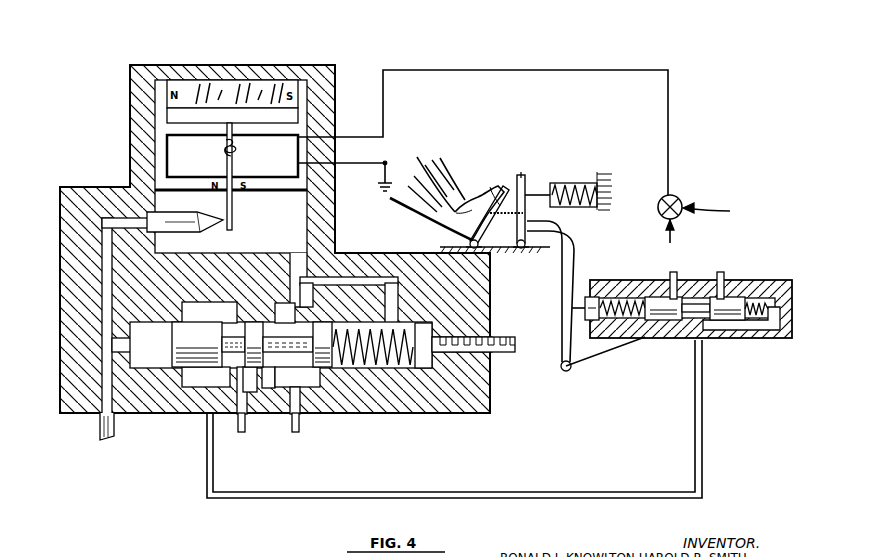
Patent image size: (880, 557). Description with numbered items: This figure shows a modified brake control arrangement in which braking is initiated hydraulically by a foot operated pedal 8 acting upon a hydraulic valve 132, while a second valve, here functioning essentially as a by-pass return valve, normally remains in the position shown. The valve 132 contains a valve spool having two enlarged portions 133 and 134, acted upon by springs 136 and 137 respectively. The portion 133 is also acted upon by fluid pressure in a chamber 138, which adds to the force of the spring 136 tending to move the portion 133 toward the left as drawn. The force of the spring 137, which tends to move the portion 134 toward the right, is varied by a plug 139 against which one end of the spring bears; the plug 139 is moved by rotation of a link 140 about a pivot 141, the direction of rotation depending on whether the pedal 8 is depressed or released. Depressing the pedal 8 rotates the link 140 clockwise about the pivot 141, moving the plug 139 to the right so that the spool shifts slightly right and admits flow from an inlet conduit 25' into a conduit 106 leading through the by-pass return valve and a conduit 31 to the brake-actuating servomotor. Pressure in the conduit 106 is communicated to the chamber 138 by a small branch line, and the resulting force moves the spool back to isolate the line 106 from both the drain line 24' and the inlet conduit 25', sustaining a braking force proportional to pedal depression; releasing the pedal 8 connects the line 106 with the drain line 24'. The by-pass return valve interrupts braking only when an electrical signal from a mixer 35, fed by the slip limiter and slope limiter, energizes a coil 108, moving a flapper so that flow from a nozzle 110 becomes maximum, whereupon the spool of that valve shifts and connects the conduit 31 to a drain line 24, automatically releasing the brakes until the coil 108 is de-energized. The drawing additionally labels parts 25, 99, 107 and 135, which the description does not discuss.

The foot operated pedal 8 is at (480, 228).
The drain line 24 is at (313, 431).
The outlet port 25 is at (87, 431).
The conduit 31 is at (245, 426).
The mixer 35 is at (684, 202).
The lamp lead 99 is at (668, 228).
The conduit 106 is at (702, 385).
The electrical lead 107 is at (495, 70).
The coil 108 is at (226, 147).
The nozzle 110 is at (183, 232).
The hydraulic valve 132 is at (730, 282).
The enlarged portion of valve spool 133 is at (733, 298).
The enlarged portion of valve spool 134 is at (665, 322).
The lamp supply lead 135 is at (712, 211).
The spring 136 is at (758, 338).
The spring 137 is at (627, 318).
The chamber 138 is at (758, 303).
The plug 139 is at (586, 297).
The link 140 is at (560, 290).
The pivot 141 is at (563, 372).
The drain line 24' is at (650, 275).
The inlet conduit 25' is at (704, 275).